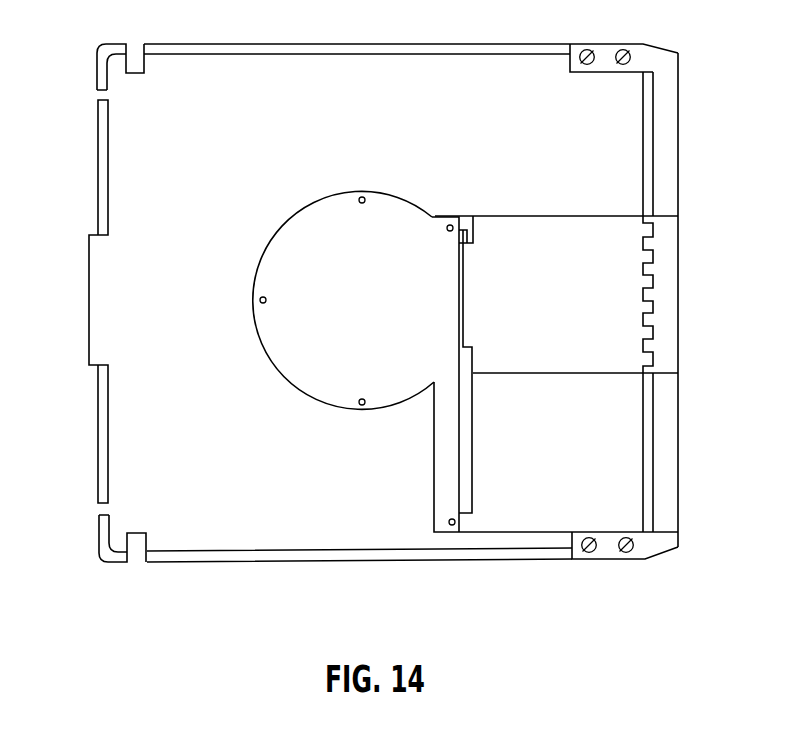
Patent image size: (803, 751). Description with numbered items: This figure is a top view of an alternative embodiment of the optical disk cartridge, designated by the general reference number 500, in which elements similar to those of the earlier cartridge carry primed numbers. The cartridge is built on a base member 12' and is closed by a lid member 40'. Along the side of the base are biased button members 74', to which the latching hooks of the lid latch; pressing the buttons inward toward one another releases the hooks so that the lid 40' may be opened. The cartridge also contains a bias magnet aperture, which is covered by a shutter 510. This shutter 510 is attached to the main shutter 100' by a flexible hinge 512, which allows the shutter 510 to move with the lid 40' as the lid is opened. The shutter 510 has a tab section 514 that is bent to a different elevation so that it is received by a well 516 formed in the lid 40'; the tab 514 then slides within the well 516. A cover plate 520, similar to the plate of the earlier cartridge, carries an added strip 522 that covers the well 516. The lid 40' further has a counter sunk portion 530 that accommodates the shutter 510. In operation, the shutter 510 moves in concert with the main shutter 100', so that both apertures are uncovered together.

The cartridge 500 is at (221, 592).
The base member 12' is at (68, 301).
The lid member 40' is at (411, 303).
The biased button member 74' is at (87, 288).
The shutter 100' is at (700, 300).
The shutter 510 is at (573, 313).
The flexible hinge 512 is at (642, 222).
The tab section 514 is at (466, 267).
The well 516 is at (473, 443).
The cover plate 520 is at (364, 318).
The strip 522 is at (445, 450).
The counter sunk portion 530 is at (573, 473).